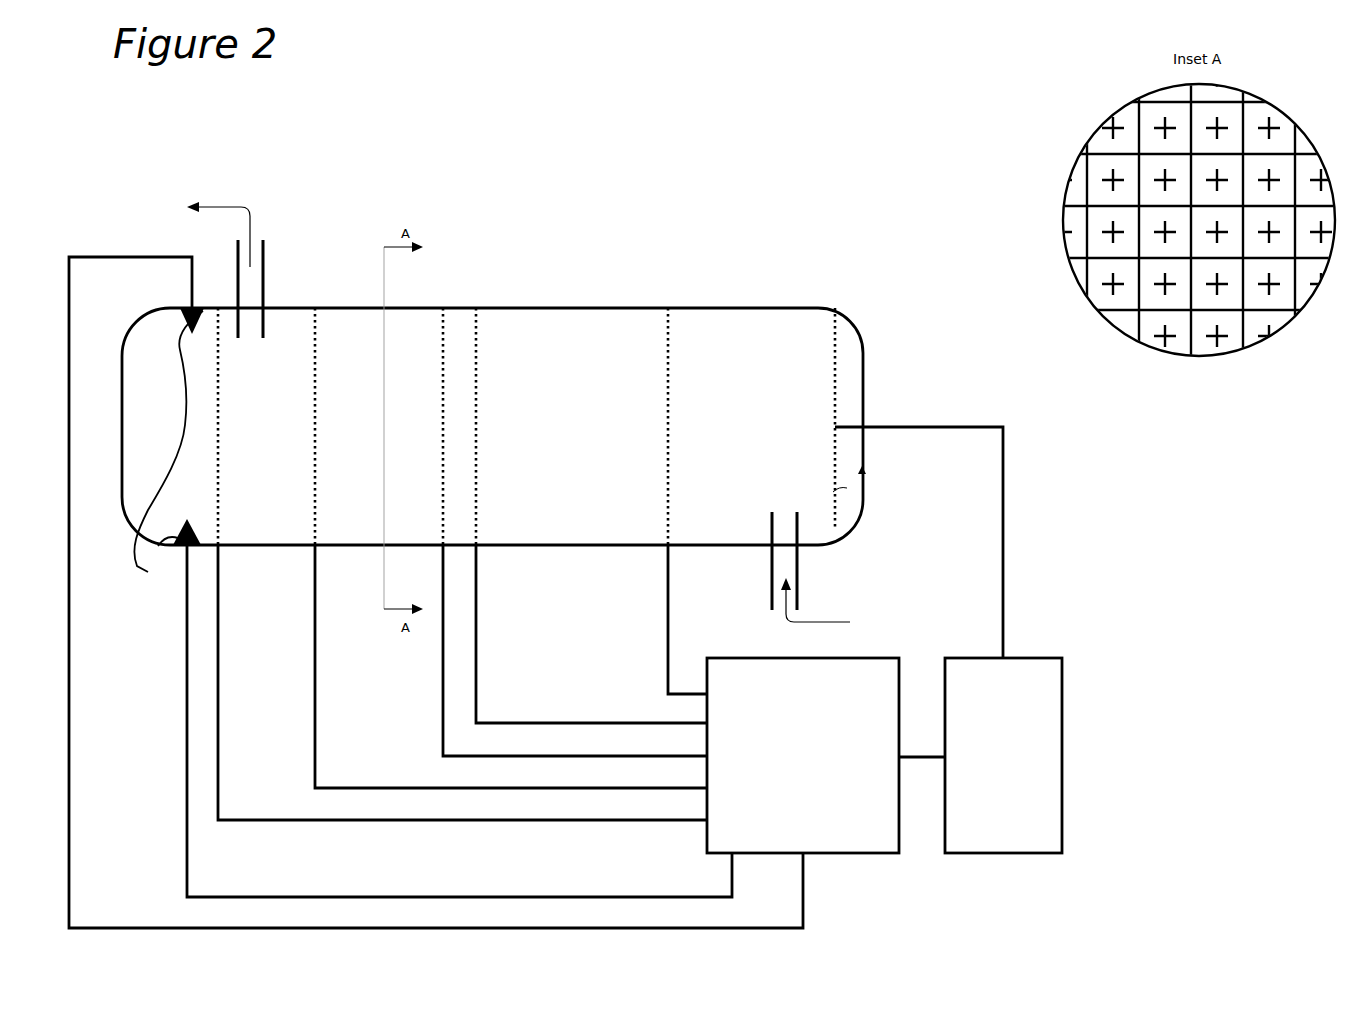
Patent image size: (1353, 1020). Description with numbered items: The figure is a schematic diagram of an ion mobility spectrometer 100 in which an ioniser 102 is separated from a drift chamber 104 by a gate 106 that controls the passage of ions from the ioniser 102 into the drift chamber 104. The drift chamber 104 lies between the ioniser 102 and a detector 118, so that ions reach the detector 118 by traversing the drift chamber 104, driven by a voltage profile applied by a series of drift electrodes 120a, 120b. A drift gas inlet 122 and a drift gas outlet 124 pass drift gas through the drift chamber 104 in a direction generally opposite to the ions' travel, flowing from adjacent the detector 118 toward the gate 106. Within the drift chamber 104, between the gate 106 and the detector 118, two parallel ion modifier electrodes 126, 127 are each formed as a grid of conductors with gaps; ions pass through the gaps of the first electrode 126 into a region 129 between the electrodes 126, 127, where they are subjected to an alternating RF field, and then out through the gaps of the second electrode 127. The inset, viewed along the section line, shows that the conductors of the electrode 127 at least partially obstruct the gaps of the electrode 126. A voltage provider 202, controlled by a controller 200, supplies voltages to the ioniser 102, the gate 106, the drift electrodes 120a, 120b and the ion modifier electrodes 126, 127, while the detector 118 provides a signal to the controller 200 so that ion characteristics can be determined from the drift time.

The ion mobility spectrometer 100 is at (546, 192).
The ioniser 102 is at (154, 460).
The drift chamber 104 is at (494, 426).
The gate 106 is at (219, 530).
The detector 118 is at (842, 336).
The first drift electrode 120a is at (318, 331).
The second drift electrode 120b is at (676, 344).
The drift gas inlet 122 is at (798, 582).
The drift gas outlet 124 is at (265, 267).
The first ion modifier electrode 126 is at (446, 331).
The second ion modifier electrode 127 is at (474, 351).
The region between the electrodes 129 is at (459, 326).
The controller 200 is at (1003, 755).
The voltage provider 202 is at (803, 755).